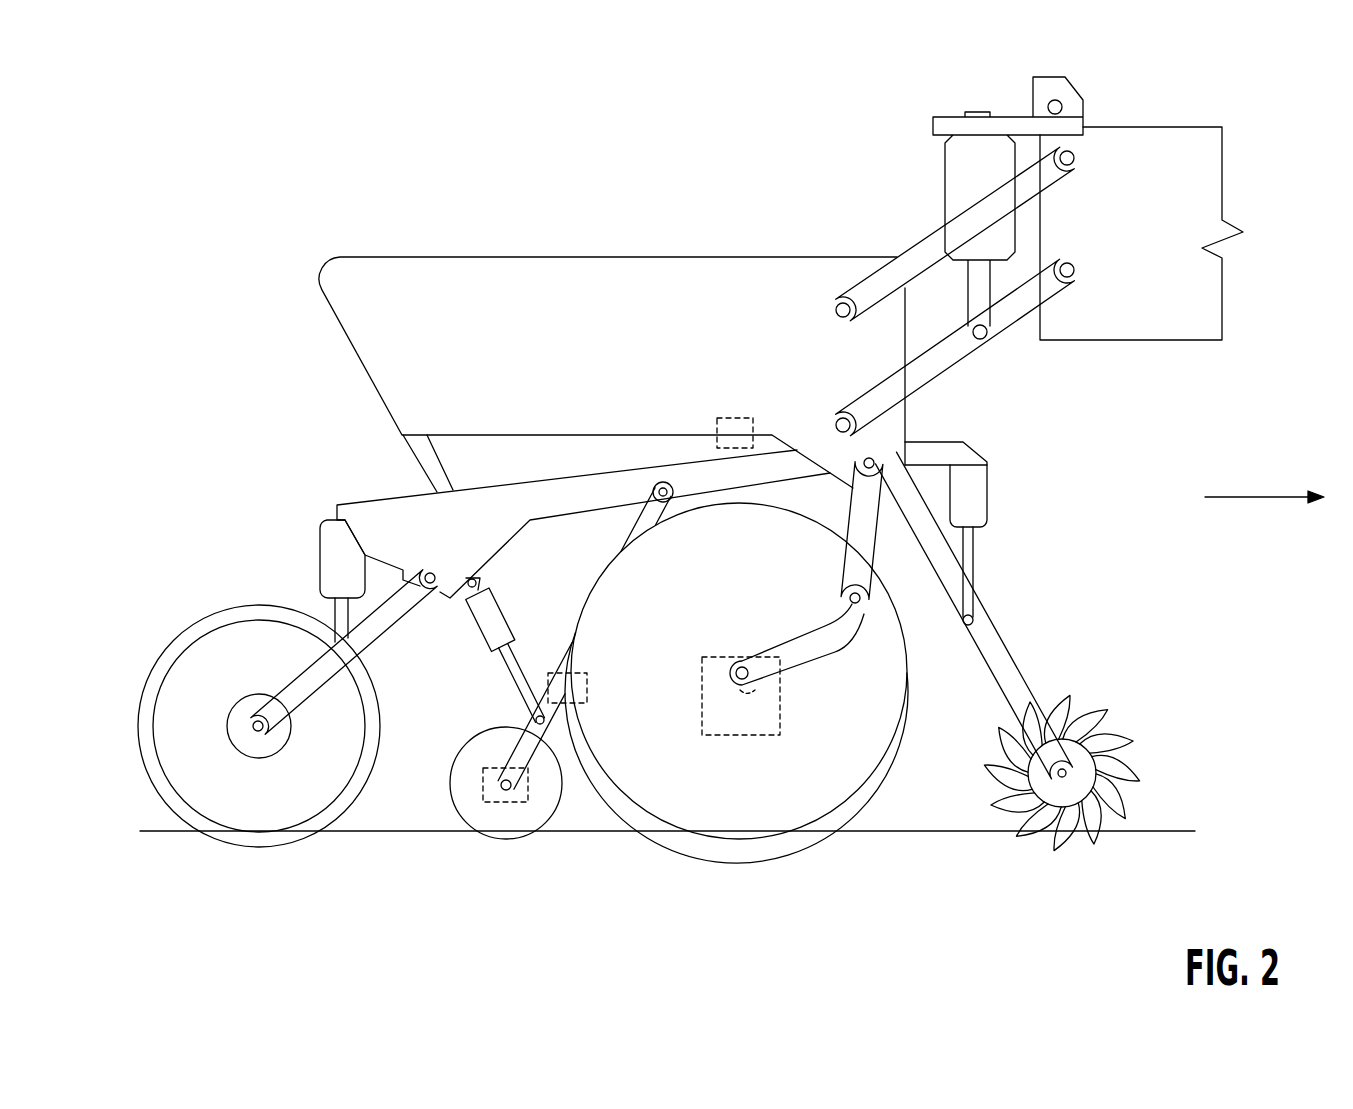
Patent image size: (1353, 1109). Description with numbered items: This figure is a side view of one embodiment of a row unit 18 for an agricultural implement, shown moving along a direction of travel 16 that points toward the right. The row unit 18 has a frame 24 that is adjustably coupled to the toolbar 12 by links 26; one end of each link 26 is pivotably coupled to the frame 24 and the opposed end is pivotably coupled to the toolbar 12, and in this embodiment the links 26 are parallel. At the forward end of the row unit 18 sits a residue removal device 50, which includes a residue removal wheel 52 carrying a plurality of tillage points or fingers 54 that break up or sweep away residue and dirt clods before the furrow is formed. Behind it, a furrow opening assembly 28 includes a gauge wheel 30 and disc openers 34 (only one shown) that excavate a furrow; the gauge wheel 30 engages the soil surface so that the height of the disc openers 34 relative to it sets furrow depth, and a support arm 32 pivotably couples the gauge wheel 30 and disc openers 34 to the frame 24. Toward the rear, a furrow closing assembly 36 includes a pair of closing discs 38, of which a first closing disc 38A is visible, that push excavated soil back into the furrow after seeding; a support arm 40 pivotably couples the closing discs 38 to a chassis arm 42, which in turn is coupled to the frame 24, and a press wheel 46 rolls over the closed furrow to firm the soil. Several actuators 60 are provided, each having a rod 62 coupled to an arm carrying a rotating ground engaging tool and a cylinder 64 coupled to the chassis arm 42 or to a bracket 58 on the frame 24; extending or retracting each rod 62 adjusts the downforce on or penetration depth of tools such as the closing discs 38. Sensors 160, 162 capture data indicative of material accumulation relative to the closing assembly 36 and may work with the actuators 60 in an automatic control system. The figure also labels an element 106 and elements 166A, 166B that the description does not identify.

The toolbar 12 is at (1177, 127).
The direction of travel 16 is at (1268, 499).
The row unit 18 is at (410, 180).
The frame 24 is at (633, 257).
The links 26 is at (1047, 262).
The furrow opening assembly 28 is at (932, 739).
The gauge wheel 30 is at (912, 668).
The support arm 32 is at (857, 545).
The disc openers 34 is at (672, 847).
The furrow closing assembly 36 is at (452, 727).
The closing discs 38 is at (452, 820).
The first closing disc 38A is at (505, 790).
The support arm 40 is at (640, 517).
The chassis arm 42 is at (372, 497).
The press wheel 46 is at (137, 735).
The residue removal device 50 is at (1052, 622).
The residue removal wheel 52 is at (1083, 782).
The fingers 54 is at (1110, 718).
The bracket 58 is at (960, 442).
The actuator 60 is at (322, 463).
The rod 62 is at (333, 608).
The cylinder 64 is at (320, 548).
The actuator cylinder 106 is at (988, 492).
The sensor 160 is at (530, 790).
The sensor 162 is at (750, 418).
The sensor 166A is at (785, 682).
The sensor 166B is at (799, 709).